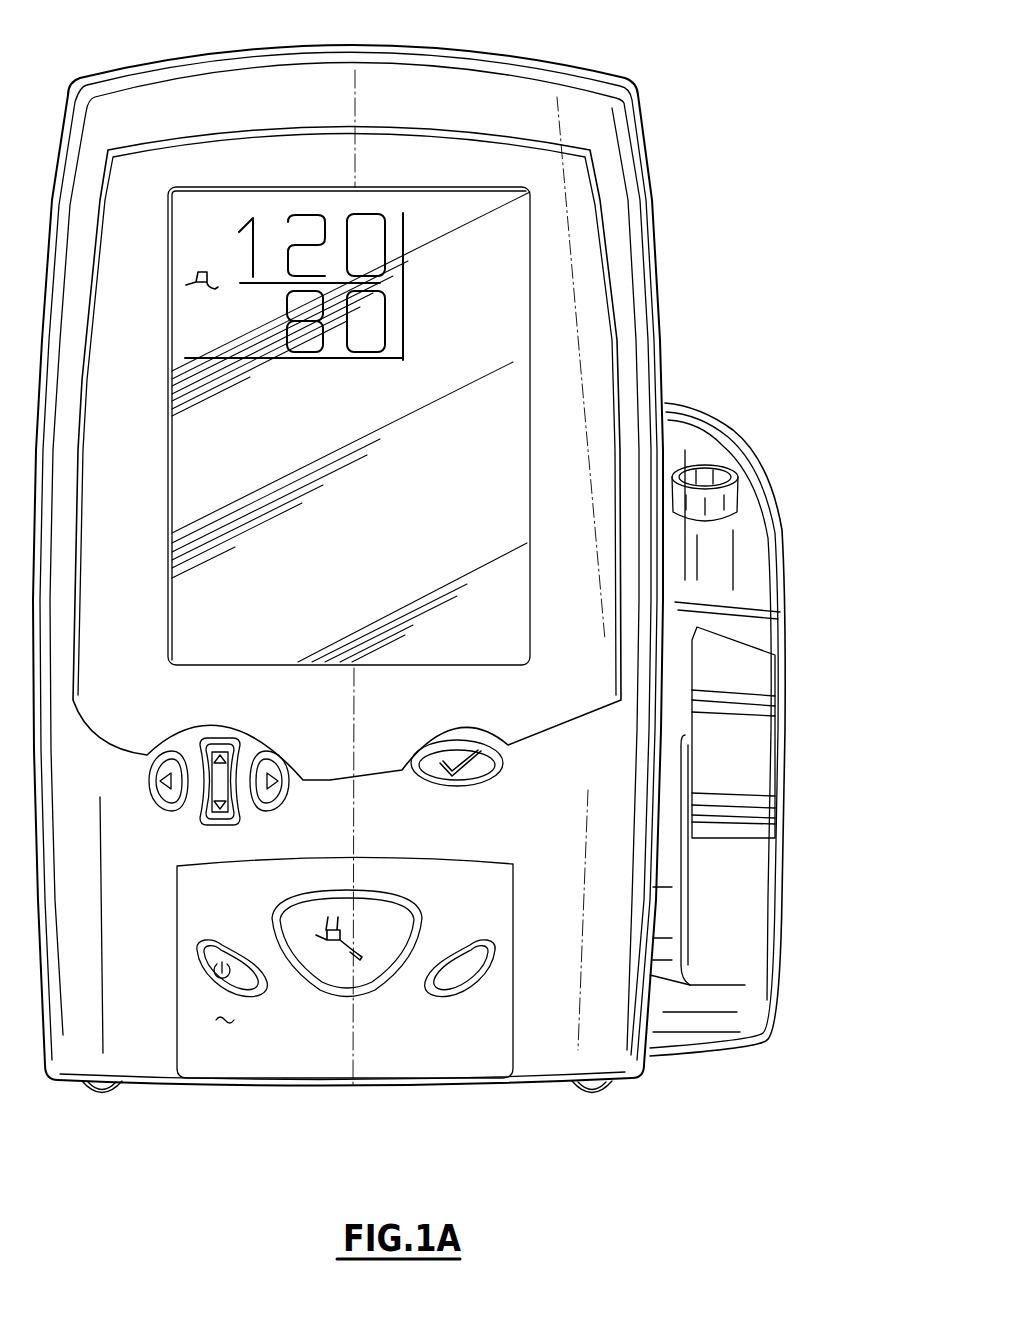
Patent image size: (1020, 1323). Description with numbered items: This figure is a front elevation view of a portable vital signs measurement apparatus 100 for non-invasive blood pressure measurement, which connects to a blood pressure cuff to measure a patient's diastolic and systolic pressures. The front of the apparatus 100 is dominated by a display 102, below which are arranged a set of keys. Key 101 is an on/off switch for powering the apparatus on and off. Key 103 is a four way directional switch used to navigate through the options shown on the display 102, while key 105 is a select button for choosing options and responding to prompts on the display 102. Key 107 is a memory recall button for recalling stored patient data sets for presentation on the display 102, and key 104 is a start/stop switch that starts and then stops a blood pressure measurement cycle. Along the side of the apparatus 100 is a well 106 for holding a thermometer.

The vital signs measurement apparatus 100 is at (553, 62).
The key 101 is at (197, 940).
The display 102 is at (440, 529).
The key 103 is at (147, 782).
The key 104 is at (403, 905).
The key 105 is at (482, 780).
The well 106 is at (782, 528).
The key 107 is at (430, 992).